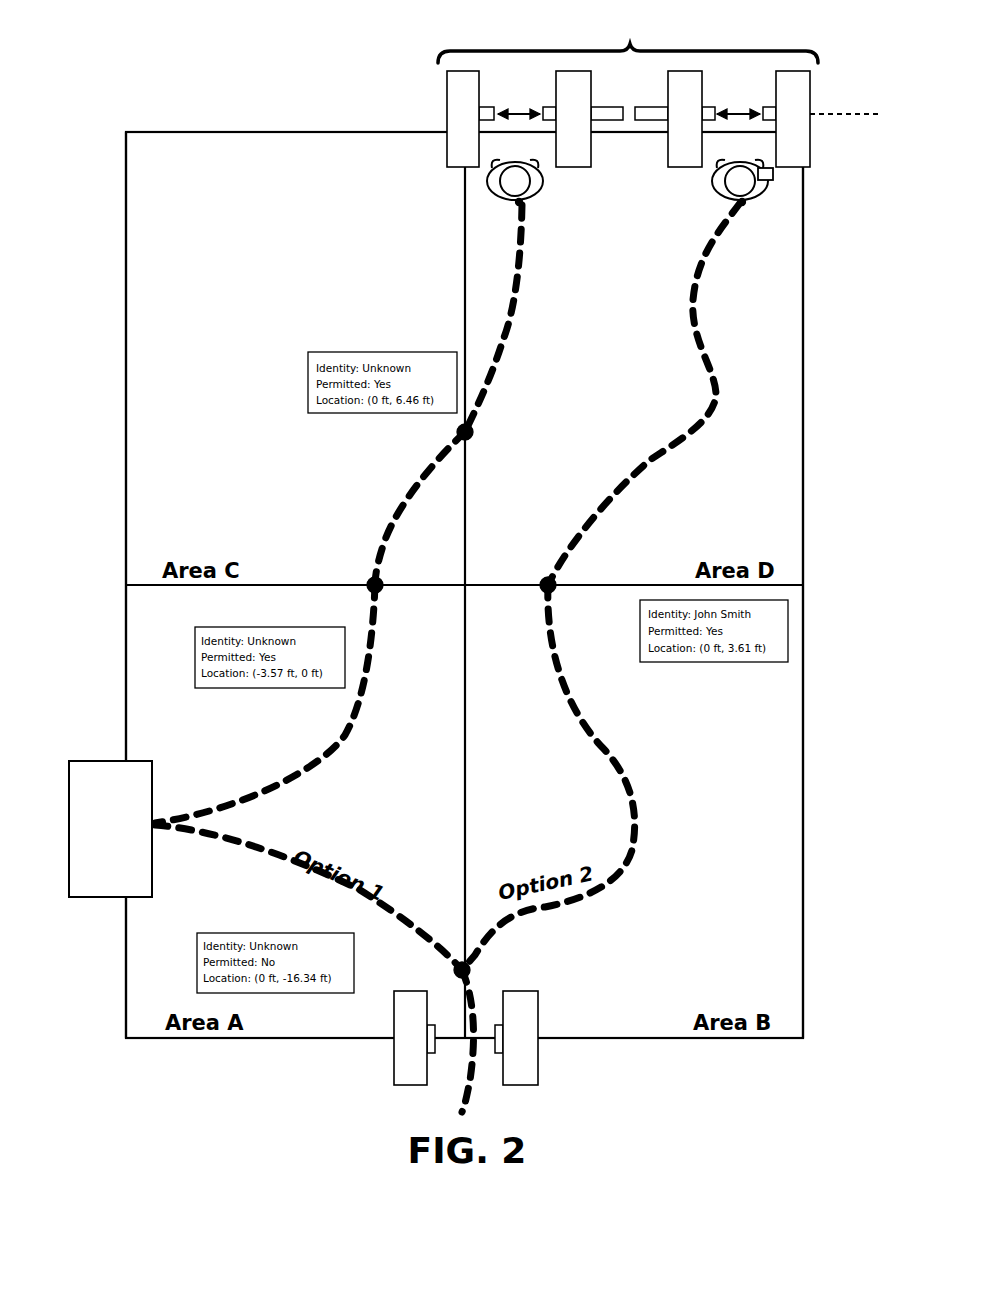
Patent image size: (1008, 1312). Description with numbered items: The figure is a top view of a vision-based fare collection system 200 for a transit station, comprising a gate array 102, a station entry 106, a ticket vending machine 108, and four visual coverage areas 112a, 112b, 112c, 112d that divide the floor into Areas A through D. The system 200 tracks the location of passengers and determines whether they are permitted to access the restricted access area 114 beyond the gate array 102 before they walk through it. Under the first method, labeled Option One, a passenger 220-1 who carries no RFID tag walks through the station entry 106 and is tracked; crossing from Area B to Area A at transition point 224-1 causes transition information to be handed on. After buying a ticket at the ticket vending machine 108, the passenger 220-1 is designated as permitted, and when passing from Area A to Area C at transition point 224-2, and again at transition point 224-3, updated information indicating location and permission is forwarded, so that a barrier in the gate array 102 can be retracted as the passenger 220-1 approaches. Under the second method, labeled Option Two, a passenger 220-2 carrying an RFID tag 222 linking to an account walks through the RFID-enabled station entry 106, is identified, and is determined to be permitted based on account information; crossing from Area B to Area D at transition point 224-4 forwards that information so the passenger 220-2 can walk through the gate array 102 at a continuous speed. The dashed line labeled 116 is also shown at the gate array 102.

The gate array 102 is at (660, 91).
The station entry 106 is at (394, 1073).
The ticket vending machine 108 is at (93, 761).
The visual coverage area 112a is at (126, 945).
The visual coverage area 112b is at (803, 942).
The visual coverage area 112c is at (126, 493).
The visual coverage area 112d is at (803, 490).
The restricted access area 114 is at (846, 101).
The door panels 116 is at (672, 124).
The vision-based fare collection system 200 is at (160, 1093).
The passenger 220-1 is at (545, 187).
The passenger 220-2 is at (760, 192).
The RFID tag 222 is at (773, 172).
The transition point 224-1 is at (454, 970).
The transition point 224-2 is at (370, 591).
The transition point 224-3 is at (456, 432).
The transition point 224-4 is at (556, 591).